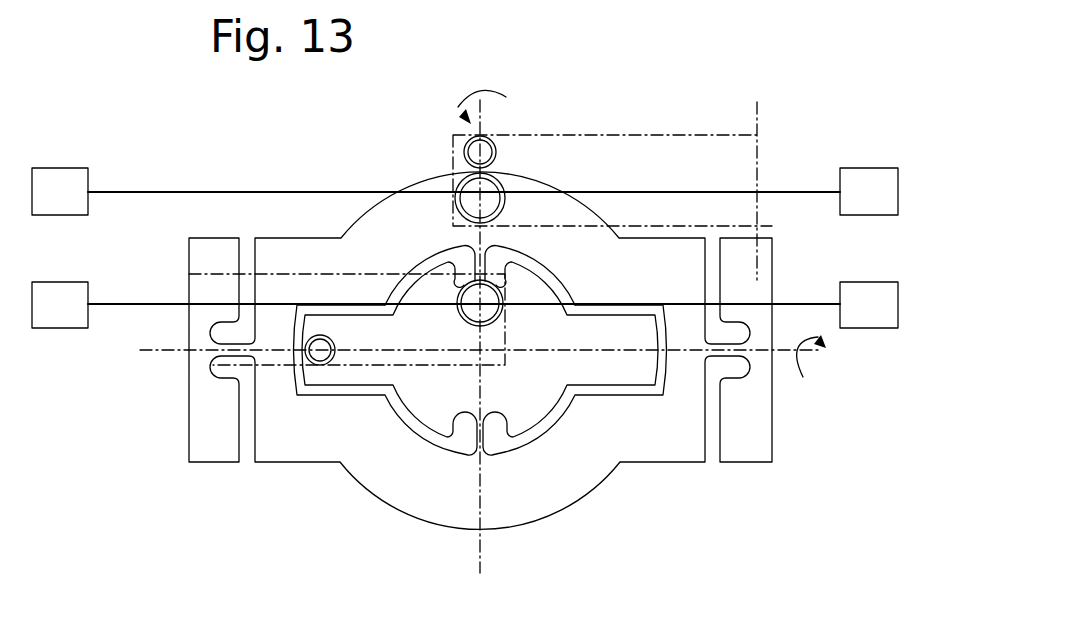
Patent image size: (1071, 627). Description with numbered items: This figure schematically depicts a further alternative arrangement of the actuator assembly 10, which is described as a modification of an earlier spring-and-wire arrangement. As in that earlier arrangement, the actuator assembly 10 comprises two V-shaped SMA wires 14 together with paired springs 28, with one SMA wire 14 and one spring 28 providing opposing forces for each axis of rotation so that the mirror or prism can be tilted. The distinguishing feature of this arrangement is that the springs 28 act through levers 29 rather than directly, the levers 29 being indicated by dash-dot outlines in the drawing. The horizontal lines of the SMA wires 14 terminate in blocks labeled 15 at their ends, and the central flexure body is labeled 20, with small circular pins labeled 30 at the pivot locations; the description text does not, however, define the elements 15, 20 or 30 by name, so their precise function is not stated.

The actuator assembly 10 is at (886, 102).
The SMA wire 14 is at (807, 190).
The actuator blocks 15 is at (883, 182).
The base body 20 is at (287, 438).
The spring 28 is at (460, 185).
The lever 29 is at (222, 273).
The pin / small bearing 30 is at (493, 147).